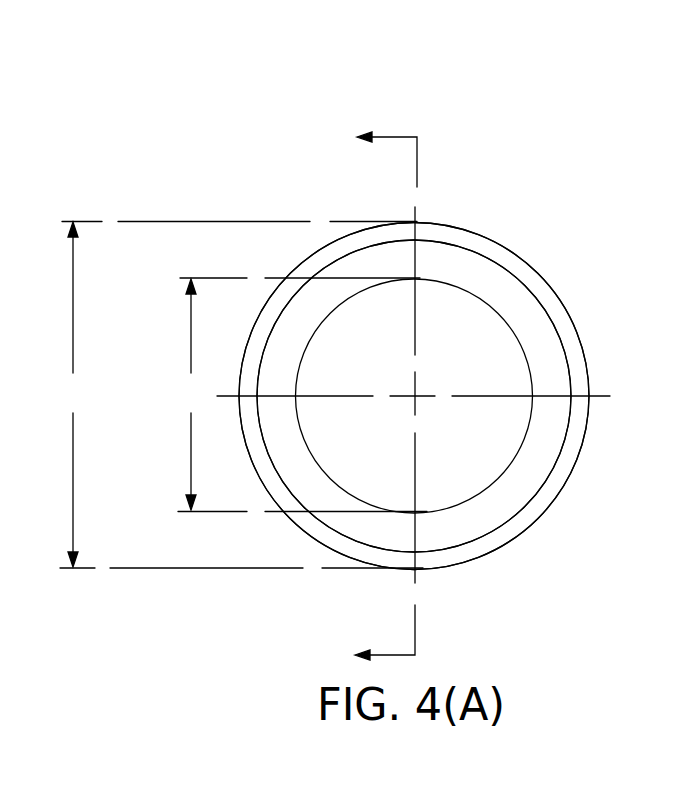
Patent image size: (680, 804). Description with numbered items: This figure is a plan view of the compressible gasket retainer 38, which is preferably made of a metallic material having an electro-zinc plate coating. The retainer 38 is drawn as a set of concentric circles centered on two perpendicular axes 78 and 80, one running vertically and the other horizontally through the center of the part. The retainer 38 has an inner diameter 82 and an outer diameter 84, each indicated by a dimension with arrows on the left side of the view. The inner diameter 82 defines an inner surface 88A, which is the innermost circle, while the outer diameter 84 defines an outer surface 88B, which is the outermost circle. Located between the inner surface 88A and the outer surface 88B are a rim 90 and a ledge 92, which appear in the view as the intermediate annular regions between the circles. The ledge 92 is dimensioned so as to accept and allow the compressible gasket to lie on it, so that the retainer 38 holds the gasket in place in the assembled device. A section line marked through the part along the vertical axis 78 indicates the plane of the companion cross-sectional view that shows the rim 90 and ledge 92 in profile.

The retainer 38 is at (580, 112).
The axis 78 is at (417, 213).
The axis 80 is at (597, 393).
The inner diameter 82 is at (299, 395).
The outer diameter 84 is at (238, 395).
The inner surface 88A is at (465, 291).
The outer surface 88B is at (516, 250).
The rim 90 is at (557, 308).
The ledge 92 is at (543, 363).